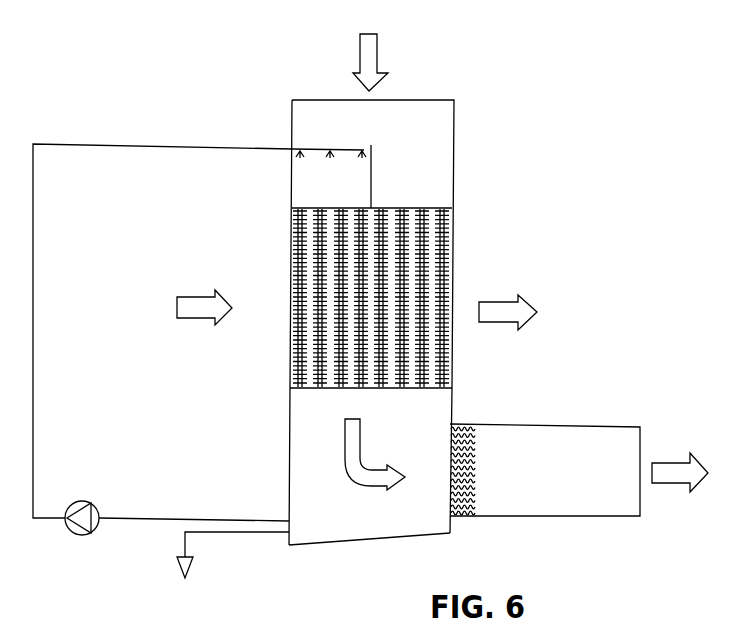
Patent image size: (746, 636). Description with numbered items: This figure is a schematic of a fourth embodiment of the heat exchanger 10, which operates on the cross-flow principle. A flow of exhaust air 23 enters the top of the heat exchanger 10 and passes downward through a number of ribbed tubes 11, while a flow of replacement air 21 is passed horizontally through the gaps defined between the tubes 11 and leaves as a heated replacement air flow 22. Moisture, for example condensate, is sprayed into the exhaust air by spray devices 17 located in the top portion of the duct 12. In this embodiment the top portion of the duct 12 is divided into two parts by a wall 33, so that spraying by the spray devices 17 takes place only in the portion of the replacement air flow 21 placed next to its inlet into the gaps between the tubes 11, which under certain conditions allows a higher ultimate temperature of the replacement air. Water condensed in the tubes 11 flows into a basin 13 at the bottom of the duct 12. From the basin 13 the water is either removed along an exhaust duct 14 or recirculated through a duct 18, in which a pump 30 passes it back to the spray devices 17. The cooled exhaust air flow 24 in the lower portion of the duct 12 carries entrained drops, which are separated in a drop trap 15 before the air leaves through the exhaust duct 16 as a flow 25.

The heat exchanger 10 is at (508, 200).
The ribbed tubes 11 is at (452, 243).
The duct 12 is at (448, 397).
The basin 13 is at (332, 535).
The exhaust duct 14 is at (222, 535).
The drop trap 15 is at (465, 427).
The exhaust duct 16 is at (577, 430).
The spray devices 17 is at (322, 148).
The duct 18 is at (170, 518).
The replacement air flow 21 is at (226, 300).
The heated replacement air flow 22 is at (505, 303).
The exhaust air flow 23 is at (376, 53).
The exhaust air flow 24 is at (363, 470).
The flow 25 is at (677, 465).
The pump 30 is at (73, 535).
The wall 33 is at (373, 168).